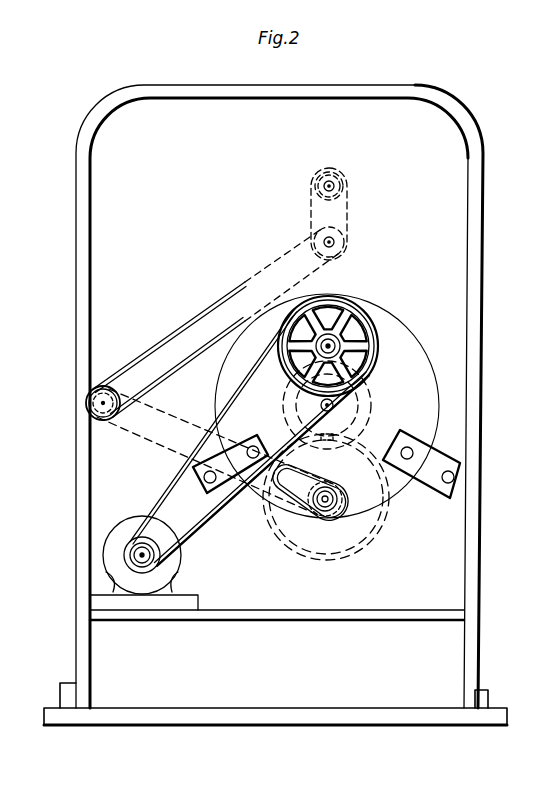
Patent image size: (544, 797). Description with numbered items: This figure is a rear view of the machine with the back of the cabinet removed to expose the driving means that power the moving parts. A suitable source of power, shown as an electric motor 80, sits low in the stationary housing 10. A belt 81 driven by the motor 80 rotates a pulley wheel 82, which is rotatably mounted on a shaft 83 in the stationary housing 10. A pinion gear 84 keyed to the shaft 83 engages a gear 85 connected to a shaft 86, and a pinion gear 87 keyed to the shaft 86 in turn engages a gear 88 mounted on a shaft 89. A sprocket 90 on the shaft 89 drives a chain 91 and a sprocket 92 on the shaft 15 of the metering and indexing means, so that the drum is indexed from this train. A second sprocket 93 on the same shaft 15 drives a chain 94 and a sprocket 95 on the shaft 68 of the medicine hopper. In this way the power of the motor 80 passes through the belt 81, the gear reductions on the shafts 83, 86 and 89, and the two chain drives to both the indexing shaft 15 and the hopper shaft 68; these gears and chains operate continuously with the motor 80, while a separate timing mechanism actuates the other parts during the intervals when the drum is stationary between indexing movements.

The stationary housing 10 is at (478, 345).
The shaft 15 is at (93, 412).
The shaft 68 is at (332, 243).
The electric motor 80 is at (170, 567).
The belt 81 is at (213, 520).
The pulley wheel 82 is at (368, 317).
The shaft 83 is at (342, 340).
The pinion gear 84 is at (380, 352).
The gear 85 is at (357, 398).
The shaft 86 is at (363, 390).
The pinion gear 87 is at (372, 398).
The gear 88 is at (390, 503).
The shaft 89 is at (337, 505).
The sprocket 90 is at (342, 512).
The chain 91 is at (277, 495).
The sprocket 92 is at (106, 421).
The sprocket 93 is at (92, 389).
The chain 94 is at (193, 318).
The sprocket 95 is at (346, 245).